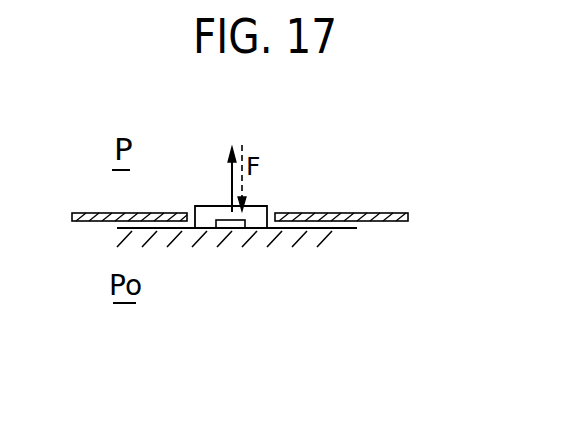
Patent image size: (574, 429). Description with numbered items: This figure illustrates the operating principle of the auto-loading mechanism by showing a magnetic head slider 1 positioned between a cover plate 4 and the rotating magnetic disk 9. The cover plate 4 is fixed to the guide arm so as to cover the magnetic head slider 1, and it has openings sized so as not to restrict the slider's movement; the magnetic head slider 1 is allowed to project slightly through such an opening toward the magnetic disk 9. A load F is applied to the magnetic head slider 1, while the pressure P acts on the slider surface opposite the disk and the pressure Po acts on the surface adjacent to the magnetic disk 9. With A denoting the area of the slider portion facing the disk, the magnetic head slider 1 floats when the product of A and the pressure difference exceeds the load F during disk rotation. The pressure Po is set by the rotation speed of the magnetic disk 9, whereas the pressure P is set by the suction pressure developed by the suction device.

The magnetic head slider 1 is at (257, 206).
The cover plate 4 is at (387, 212).
The magnetic disk 9 is at (322, 229).